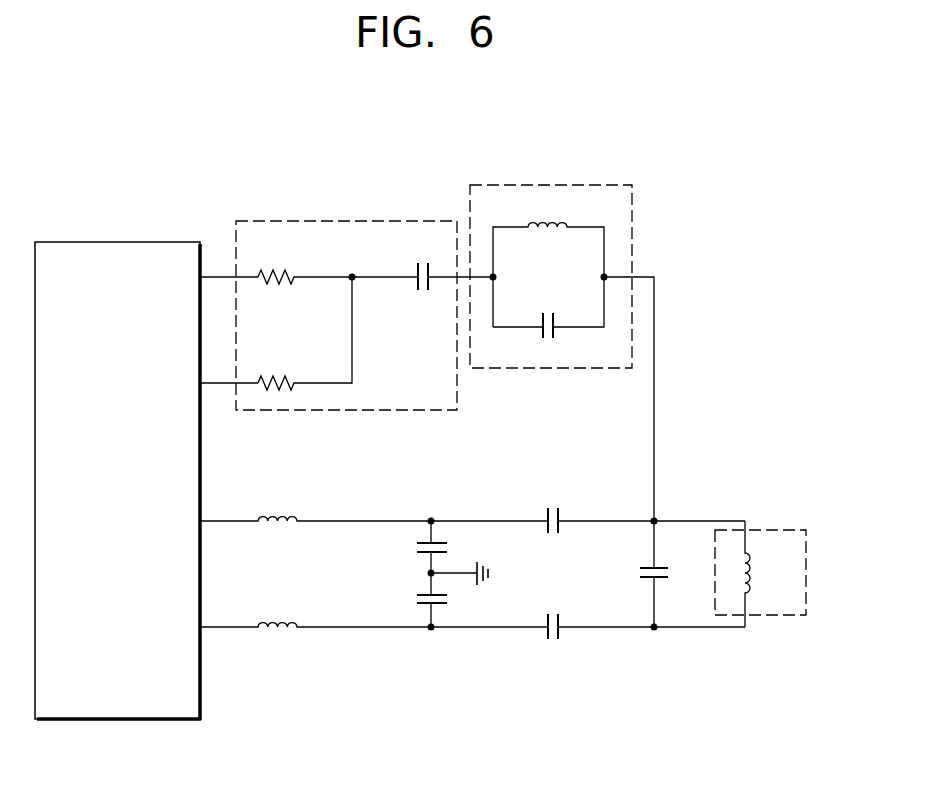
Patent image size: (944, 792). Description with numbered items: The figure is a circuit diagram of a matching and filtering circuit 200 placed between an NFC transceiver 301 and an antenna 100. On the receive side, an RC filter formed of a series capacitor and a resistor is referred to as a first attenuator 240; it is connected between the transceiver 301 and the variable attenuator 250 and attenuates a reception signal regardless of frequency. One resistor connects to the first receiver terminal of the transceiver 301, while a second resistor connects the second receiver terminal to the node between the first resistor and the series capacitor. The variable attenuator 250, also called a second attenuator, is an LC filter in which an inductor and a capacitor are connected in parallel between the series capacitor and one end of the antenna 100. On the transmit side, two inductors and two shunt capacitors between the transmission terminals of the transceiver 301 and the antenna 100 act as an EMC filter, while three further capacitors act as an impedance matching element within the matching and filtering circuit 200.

The transceiver 301 is at (145, 242).
The first attenuator 240 is at (358, 221).
The variable attenuator 250 is at (589, 185).
The matching and filtering circuit 200 is at (449, 464).
The antenna 100 is at (783, 530).